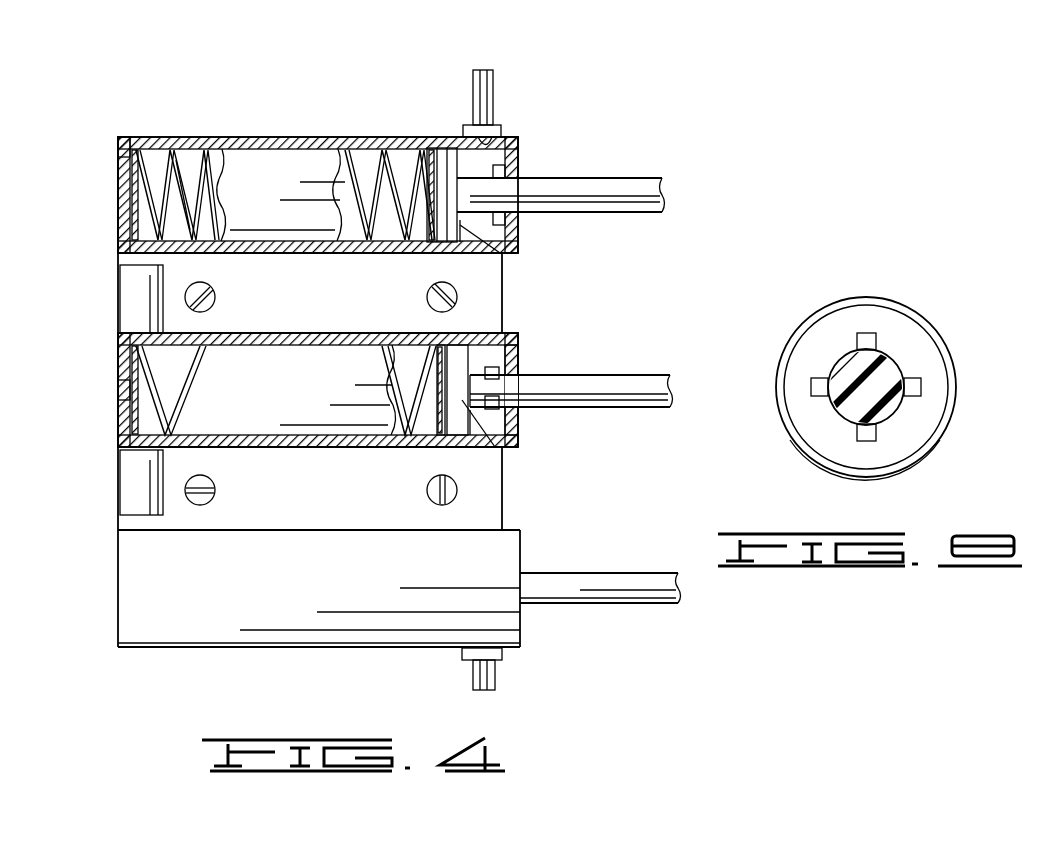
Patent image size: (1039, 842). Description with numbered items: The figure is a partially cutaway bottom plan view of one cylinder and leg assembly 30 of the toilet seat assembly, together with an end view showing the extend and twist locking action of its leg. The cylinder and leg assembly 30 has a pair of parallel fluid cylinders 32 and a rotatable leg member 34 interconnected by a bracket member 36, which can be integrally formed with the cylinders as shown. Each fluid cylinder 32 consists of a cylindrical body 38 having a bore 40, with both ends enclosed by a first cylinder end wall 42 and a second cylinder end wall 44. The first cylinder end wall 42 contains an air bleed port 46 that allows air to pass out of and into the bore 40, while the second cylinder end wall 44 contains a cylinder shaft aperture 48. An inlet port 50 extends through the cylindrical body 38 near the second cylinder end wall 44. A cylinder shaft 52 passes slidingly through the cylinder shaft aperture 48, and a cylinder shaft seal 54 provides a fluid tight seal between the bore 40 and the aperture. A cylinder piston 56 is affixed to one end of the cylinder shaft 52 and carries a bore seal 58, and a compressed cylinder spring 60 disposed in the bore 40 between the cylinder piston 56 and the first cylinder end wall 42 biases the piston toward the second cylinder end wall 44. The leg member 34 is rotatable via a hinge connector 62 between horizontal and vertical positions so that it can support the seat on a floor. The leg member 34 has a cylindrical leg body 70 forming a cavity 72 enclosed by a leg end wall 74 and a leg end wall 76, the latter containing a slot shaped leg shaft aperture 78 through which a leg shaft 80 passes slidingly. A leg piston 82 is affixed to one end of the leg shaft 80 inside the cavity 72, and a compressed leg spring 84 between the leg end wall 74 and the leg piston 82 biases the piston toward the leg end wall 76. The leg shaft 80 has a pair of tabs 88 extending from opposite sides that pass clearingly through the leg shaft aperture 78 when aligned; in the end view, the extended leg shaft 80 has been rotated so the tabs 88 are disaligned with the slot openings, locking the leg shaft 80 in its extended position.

In FIG. 4, the cylinder and leg assembly 30 is at (645, 100).
In FIG. 4, the fluid cylinder 32 is at (250, 150).
In FIG. 4, the leg member 34 is at (275, 380).
In FIG. 6, the leg member 34 is at (830, 302).
In FIG. 4, the bracket member 36 is at (330, 502).
In FIG. 4, the cylindrical body 38 is at (356, 140).
In FIG. 4, the bore 40 is at (348, 192).
In FIG. 4, the first cylinder end wall 42 is at (120, 150).
In FIG. 4, the second cylinder end wall 44 is at (520, 165).
In FIG. 4, the air bleed port 46 is at (135, 195).
In FIG. 4, the cylinder shaft aperture 48 is at (520, 213).
In FIG. 4, the inlet port 50 is at (495, 150).
In FIG. 4, the cylinder shaft 52 is at (620, 185).
In FIG. 4, the cylinder shaft seal 54 is at (518, 240).
In FIG. 4, the cylinder piston 56 is at (500, 252).
In FIG. 4, the bore seal 58 is at (442, 150).
In FIG. 4, the cylinder spring 60 is at (190, 215).
In FIG. 4, the hinge connector 62 is at (140, 312).
In FIG. 4, the cylindrical leg body 70 is at (500, 335).
In FIG. 6, the cylindrical leg body 70 is at (835, 466).
In FIG. 4, the cavity 72 is at (418, 365).
In FIG. 4, the leg end wall 74 is at (122, 392).
In FIG. 4, the leg end wall 76 is at (520, 365).
In FIG. 6, the leg end wall 76 is at (898, 440).
In FIG. 4, the leg shaft aperture 78 is at (522, 416).
In FIG. 6, the leg shaft aperture 78 is at (875, 333).
In FIG. 4, the leg shaft 80 is at (645, 378).
In FIG. 4, the leg piston 82 is at (482, 447).
In FIG. 4, the leg spring 84 is at (180, 395).
In FIG. 4, the tabs 88 is at (494, 398).
In FIG. 6, the tabs 88 is at (826, 392).